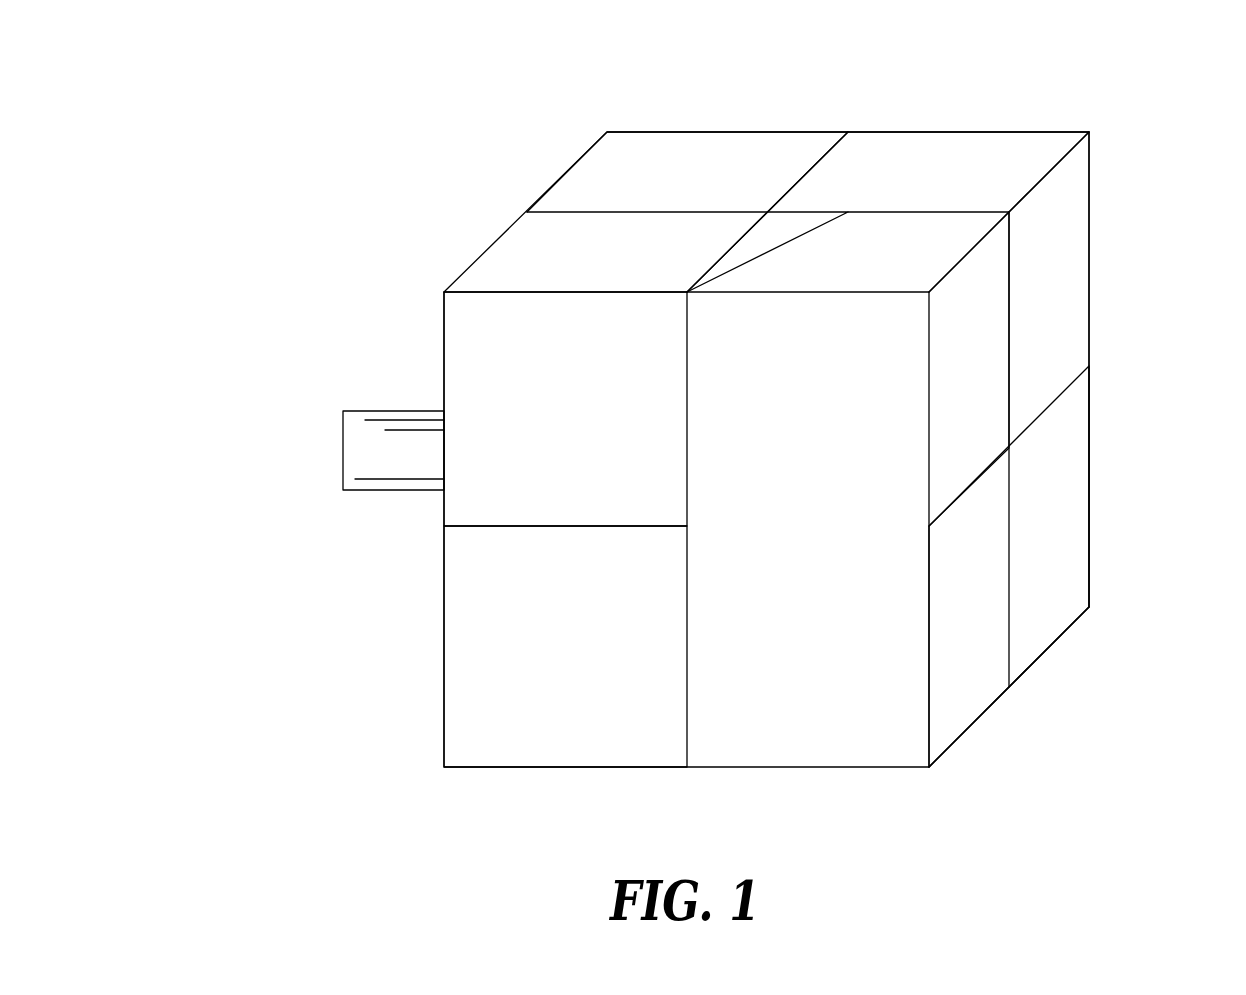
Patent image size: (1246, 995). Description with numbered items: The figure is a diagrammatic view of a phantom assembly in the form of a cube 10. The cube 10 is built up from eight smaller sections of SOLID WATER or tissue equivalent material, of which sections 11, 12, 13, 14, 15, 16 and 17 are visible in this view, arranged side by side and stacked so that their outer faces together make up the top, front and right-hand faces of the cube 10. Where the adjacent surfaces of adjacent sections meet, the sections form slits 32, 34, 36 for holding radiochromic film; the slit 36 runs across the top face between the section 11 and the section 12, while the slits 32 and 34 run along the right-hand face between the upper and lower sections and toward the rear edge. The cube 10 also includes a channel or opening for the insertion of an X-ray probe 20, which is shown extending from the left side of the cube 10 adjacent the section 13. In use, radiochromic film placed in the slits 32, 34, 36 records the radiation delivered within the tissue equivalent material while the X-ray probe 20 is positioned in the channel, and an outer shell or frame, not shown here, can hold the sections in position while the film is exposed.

The cube 10 is at (541, 55).
The section 11 is at (638, 144).
The slit 36 is at (840, 143).
The section 12 is at (948, 172).
The section 14 is at (980, 303).
The slit 32 is at (1010, 388).
The slit 34 is at (1087, 373).
The section 17 is at (1050, 605).
The section 16 is at (959, 698).
The section 13 is at (505, 390).
The section 15 is at (485, 697).
The X-ray probe 20 is at (364, 450).